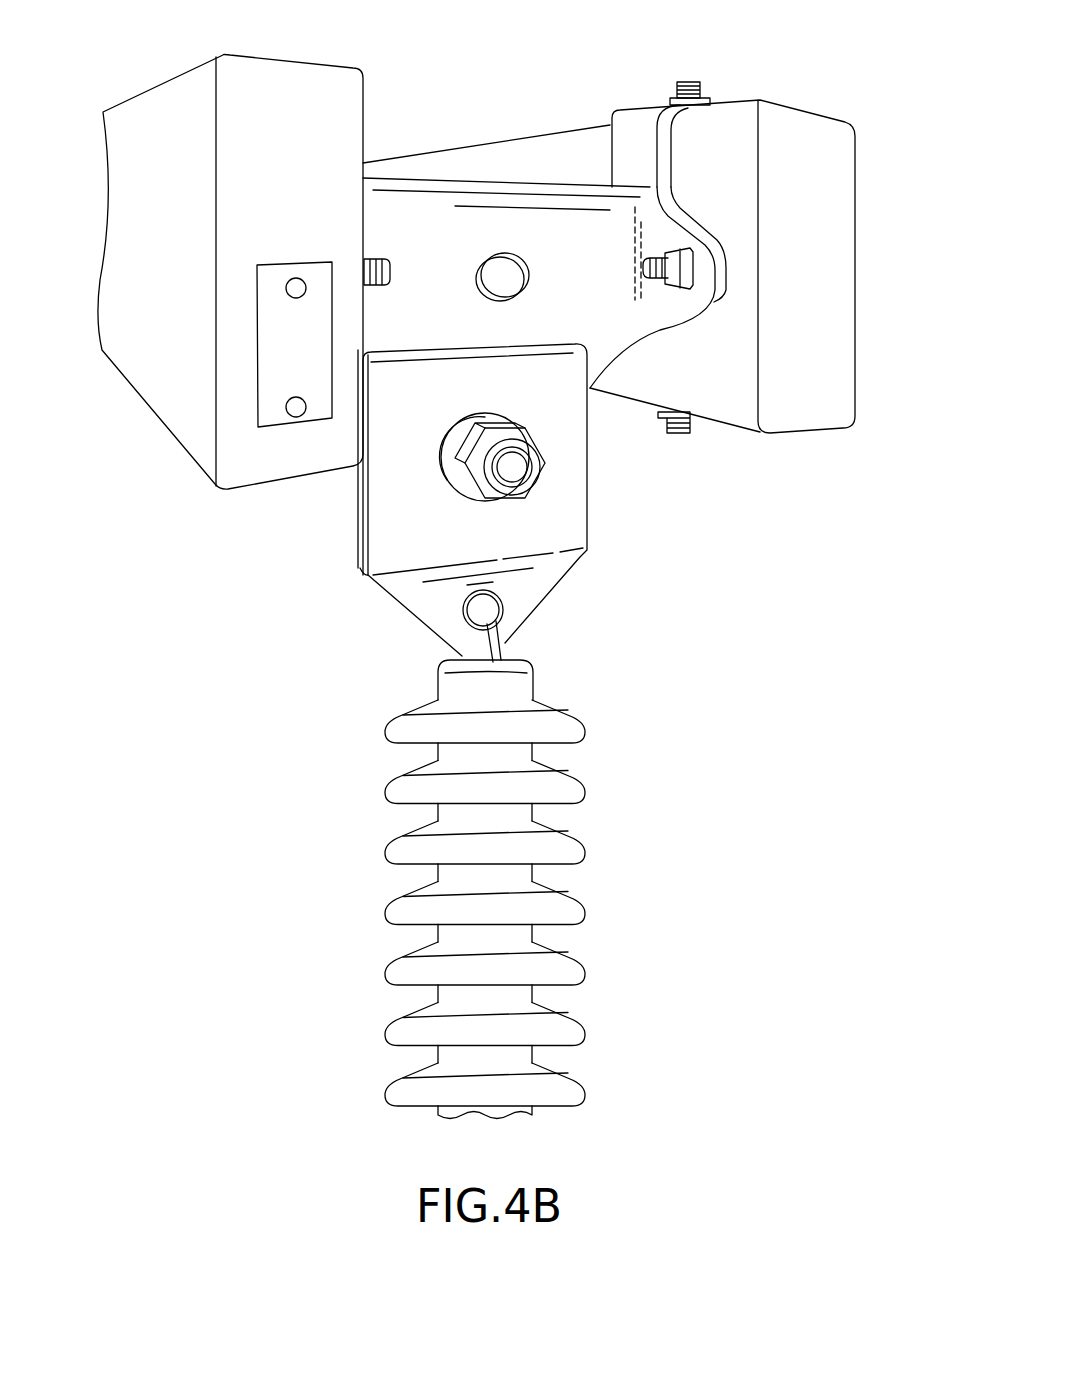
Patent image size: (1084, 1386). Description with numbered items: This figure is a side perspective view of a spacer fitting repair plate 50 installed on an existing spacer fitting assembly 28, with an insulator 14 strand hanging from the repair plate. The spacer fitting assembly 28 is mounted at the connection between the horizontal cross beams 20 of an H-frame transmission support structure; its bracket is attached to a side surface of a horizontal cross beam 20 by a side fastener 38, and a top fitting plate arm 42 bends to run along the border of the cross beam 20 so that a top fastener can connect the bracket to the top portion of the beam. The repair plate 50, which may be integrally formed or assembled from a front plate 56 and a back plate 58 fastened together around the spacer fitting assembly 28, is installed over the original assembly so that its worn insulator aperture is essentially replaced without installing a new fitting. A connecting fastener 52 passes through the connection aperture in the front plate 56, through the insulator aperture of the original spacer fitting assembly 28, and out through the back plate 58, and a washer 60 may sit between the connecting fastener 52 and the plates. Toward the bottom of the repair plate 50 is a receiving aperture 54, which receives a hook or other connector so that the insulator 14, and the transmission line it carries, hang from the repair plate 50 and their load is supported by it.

The insulator 14 is at (570, 850).
The horizontal cross beam 20 is at (316, 80).
The spacer fitting assembly 28 is at (473, 194).
The side fastener 38 is at (683, 292).
The top fitting plate arm 42 is at (705, 102).
The spacer fitting repair plate 50 is at (370, 596).
The connecting fastener 52 is at (517, 476).
The receiving aperture 54 is at (503, 622).
The front plate 56 is at (387, 568).
The back plate 58 is at (358, 522).
The washer 60 is at (513, 432).